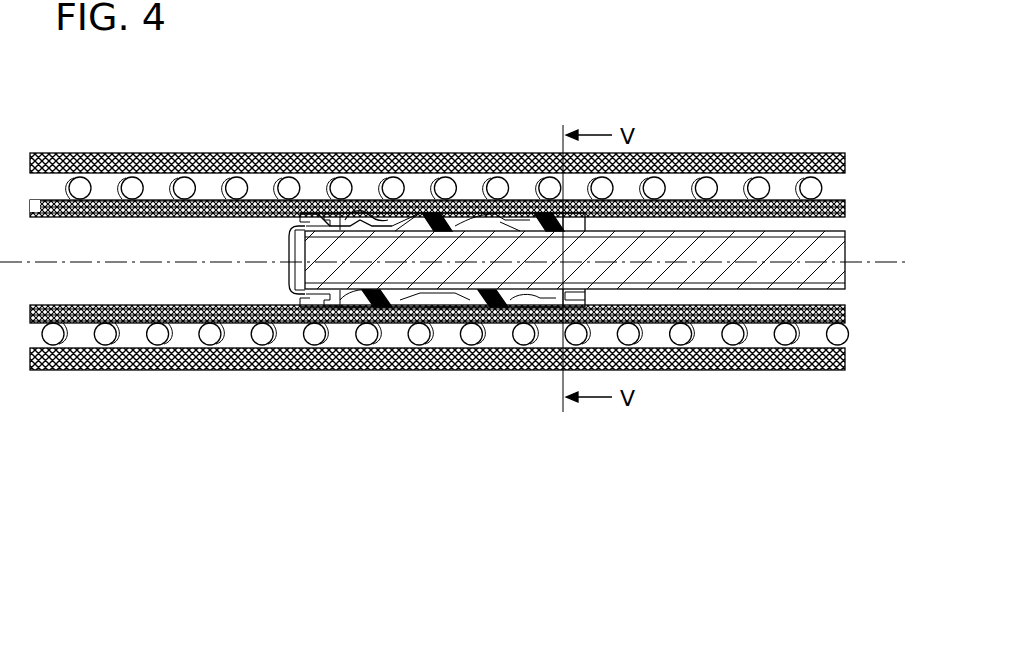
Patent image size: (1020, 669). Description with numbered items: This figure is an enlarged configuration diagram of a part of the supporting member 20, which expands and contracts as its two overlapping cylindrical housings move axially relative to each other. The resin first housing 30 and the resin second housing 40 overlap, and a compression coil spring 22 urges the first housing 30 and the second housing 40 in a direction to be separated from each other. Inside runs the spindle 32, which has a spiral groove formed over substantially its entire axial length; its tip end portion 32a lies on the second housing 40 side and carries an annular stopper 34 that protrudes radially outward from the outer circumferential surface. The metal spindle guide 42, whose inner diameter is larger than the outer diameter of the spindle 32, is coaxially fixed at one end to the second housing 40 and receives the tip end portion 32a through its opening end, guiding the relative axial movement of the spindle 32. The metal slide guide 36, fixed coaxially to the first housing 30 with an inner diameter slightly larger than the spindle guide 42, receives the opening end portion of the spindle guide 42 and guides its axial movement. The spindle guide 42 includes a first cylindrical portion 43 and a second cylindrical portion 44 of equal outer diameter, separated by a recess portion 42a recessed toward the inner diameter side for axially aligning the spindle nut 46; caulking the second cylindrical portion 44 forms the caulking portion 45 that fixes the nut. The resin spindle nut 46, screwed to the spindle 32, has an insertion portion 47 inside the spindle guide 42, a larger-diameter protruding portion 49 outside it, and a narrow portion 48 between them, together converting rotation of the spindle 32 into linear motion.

The supporting member 20 is at (834, 120).
The spring 22 is at (175, 153).
The first housing 30 is at (752, 153).
The spindle 32 is at (674, 245).
The tip end portion 32a is at (293, 285).
The annular stopper 34 is at (323, 312).
The slide guide 36 is at (521, 213).
The second housing 40 is at (125, 177).
The spindle guide 42 is at (482, 88).
The recess portion 42a is at (362, 213).
The first cylindrical portion 43 is at (304, 210).
The second cylindrical portion 44 is at (411, 214).
The caulking portion 45 is at (464, 214).
The spindle nut 46 is at (552, 420).
The insertion portion 47 is at (410, 300).
The narrow portion 48 is at (485, 290).
The protruding portion 49 is at (527, 300).